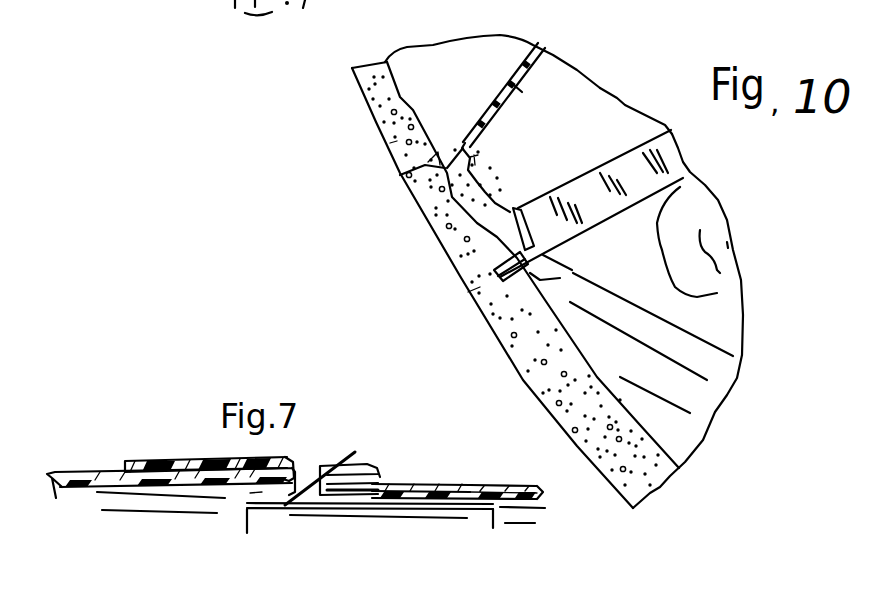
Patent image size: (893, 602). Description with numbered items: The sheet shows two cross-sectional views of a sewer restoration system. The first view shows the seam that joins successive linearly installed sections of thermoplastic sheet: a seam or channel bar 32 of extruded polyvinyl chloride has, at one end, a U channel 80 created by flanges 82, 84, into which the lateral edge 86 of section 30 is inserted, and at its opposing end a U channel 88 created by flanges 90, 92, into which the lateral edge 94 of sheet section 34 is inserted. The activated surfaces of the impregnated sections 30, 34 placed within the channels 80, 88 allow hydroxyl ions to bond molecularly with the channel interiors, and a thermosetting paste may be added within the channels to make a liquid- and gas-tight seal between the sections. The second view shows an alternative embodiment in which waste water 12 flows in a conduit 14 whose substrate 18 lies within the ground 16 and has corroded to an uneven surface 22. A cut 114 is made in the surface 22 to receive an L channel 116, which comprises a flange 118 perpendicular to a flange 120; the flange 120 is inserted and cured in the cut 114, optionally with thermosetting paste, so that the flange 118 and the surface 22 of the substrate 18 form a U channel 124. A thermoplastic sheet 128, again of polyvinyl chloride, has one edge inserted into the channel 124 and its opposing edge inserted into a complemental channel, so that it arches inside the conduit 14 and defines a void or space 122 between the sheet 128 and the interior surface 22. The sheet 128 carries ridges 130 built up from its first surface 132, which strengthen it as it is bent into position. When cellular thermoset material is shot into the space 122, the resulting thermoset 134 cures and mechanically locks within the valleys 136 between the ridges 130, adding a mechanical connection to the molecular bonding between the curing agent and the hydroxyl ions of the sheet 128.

In FIG. 10, the waste water 12 is at (686, 391).
In FIG. 10, the conduit 14 is at (362, 95).
In FIG. 10, the ground 16 is at (424, 277).
In FIG. 10, the substrate 18 is at (397, 143).
In FIG. 10, the uneven surface 22 is at (408, 47).
In FIG. 10, the cut 114 is at (480, 287).
In FIG. 10, the L channel 116 is at (642, 137).
In FIG. 10, the flange 118 is at (694, 152).
In FIG. 10, the flange 120 is at (582, 268).
In FIG. 10, the void or space 122 is at (400, 175).
In FIG. 10, the U channel 124 is at (527, 216).
In FIG. 10, the thermoplastic sheet 128 is at (577, 101).
In FIG. 10, the ridges 130 is at (490, 140).
In FIG. 10, the first surface 132 is at (546, 31).
In FIG. 10, the thermoset 134 is at (453, 200).
In FIG. 10, the valleys 136 is at (517, 86).
In FIG. 7, the section 30 is at (80, 476).
In FIG. 7, the seam or channel bar 32 is at (356, 426).
In FIG. 7, the section 34 is at (495, 485).
In FIG. 7, the U channel 80 is at (253, 493).
In FIG. 7, the flange 82 is at (202, 461).
In FIG. 7, the flange 84 is at (270, 512).
In FIG. 7, the lateral edge 86 is at (286, 477).
In FIG. 7, the U channel 88 is at (380, 483).
In FIG. 7, the flange 90 is at (378, 476).
In FIG. 7, the flange 92 is at (470, 518).
In FIG. 7, the lateral edge 94 is at (355, 452).